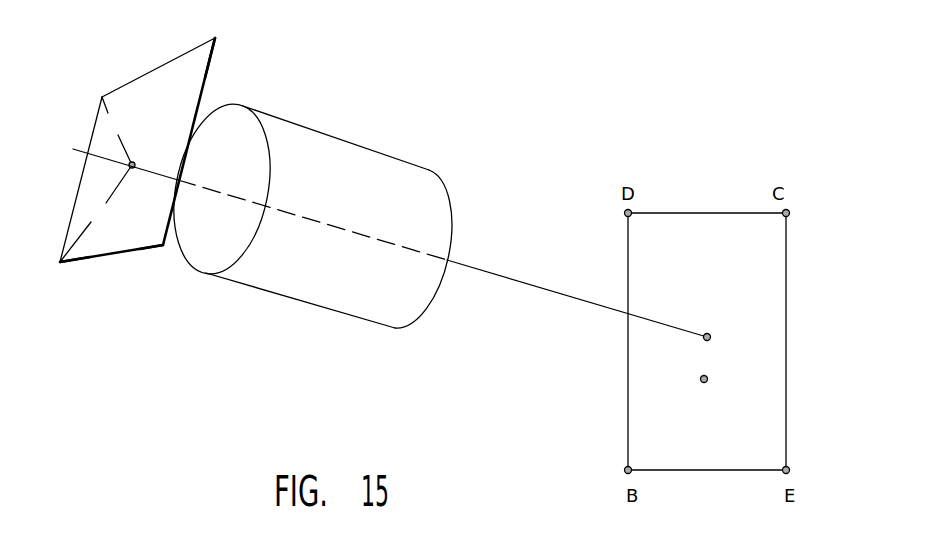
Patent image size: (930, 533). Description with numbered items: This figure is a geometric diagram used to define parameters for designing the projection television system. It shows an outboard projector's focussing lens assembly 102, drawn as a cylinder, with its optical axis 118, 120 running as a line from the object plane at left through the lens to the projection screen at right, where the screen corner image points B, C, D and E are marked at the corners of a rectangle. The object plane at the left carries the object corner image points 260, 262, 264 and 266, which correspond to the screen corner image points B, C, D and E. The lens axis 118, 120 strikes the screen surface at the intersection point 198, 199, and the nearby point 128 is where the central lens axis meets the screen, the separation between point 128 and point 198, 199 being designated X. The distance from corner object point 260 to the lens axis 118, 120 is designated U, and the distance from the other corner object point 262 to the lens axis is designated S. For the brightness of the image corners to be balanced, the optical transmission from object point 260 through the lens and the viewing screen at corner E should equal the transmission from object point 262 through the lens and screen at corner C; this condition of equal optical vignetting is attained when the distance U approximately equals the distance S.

The focussing lens assembly 102 is at (285, 302).
The optical axis 118 is at (390, 243).
The optical axis 120 is at (478, 268).
The intersection point of central lens axis with screen surface 128 is at (707, 380).
The intersection point of outboard lens axis with screen surface 198 is at (736, 306).
The intersection point of outboard lens axis with screen surface 199 is at (707, 333).
The object corner image point 260 is at (102, 97).
The object corner image point 262 is at (60, 264).
The object corner image point 264 is at (215, 38).
The object corner image point 266 is at (164, 247).